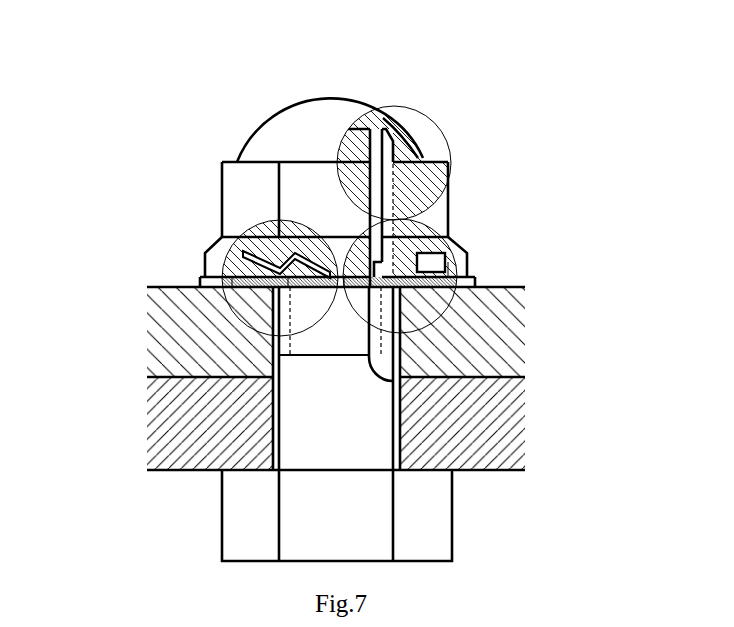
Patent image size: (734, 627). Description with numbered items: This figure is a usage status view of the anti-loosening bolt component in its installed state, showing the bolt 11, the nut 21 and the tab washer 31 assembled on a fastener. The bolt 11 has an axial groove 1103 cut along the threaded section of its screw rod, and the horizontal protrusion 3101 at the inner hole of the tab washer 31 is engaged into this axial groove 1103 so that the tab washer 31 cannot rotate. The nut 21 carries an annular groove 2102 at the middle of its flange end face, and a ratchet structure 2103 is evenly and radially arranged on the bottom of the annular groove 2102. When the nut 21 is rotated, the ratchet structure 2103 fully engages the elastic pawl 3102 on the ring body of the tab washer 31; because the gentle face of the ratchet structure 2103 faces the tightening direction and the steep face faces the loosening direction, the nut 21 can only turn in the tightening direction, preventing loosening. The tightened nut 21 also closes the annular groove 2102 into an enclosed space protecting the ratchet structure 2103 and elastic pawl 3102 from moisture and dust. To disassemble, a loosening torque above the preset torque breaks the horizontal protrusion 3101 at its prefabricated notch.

The nut 21 is at (253, 198).
The ratchet structure 2103 is at (218, 211).
The elastic pawl 3102 is at (215, 252).
The tab washer 31 is at (203, 283).
The horizontal protrusion 3101 is at (440, 222).
The annular groove 2102 is at (445, 268).
The axial groove 1103 is at (368, 307).
The bolt 11 is at (257, 515).